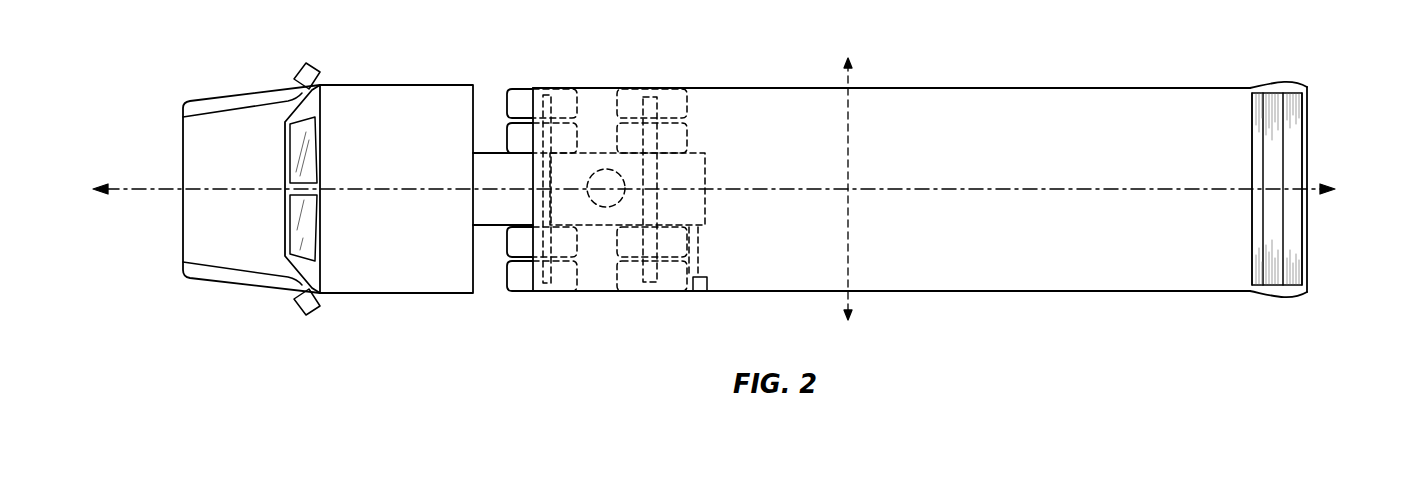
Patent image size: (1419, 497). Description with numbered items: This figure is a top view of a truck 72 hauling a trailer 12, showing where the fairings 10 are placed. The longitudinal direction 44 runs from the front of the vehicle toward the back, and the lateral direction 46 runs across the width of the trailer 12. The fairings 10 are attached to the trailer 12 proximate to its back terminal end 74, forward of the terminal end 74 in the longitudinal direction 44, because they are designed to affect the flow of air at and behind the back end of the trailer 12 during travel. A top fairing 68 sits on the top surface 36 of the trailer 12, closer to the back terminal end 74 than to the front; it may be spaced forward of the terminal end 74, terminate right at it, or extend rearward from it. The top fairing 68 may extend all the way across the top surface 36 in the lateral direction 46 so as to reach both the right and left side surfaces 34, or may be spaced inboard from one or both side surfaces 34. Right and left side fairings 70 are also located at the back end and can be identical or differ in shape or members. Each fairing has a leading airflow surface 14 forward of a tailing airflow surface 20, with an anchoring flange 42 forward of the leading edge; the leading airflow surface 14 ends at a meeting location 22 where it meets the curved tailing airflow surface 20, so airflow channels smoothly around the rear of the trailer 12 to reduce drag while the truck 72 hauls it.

The truck 72 is at (398, 85).
The trailer 12 is at (756, 191).
The right and left side surfaces 34 is at (951, 86).
The top surface 36 is at (997, 157).
The lateral direction 46 is at (848, 176).
The longitudinal direction 44 is at (935, 192).
The fairing 10 is at (1300, 191).
The top fairing 68 is at (1291, 191).
The right and left side fairings 70 is at (1298, 79).
The leading airflow surface 14 is at (1262, 80).
The meeting location 22 is at (1285, 78).
The anchoring flange 42 is at (1250, 85).
The tailing airflow surface 20 is at (1320, 86).
The terminal end 74 is at (1320, 160).